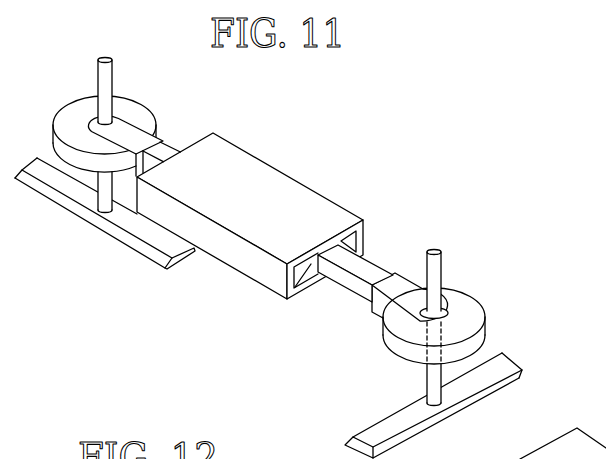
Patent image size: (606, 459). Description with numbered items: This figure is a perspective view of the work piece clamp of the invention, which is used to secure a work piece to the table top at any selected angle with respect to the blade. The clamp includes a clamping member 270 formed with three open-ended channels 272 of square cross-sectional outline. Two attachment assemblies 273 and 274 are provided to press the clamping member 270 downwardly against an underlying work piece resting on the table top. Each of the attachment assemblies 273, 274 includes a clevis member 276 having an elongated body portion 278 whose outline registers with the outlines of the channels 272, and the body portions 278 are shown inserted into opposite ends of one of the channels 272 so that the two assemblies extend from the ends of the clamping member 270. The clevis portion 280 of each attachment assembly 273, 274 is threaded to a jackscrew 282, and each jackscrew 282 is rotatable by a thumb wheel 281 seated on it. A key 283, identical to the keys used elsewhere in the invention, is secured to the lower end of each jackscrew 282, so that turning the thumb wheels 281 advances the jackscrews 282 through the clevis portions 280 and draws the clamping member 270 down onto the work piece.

The clamping member 270 is at (290, 182).
The open-ended channels 272 is at (355, 243).
The attachment assembly 273 is at (468, 285).
The attachment assembly 274 is at (150, 105).
The clevis member 276 is at (354, 233).
The elongated body portion 278 is at (160, 157).
The clevis portion 280 is at (128, 132).
The thumb wheel 281 is at (70, 110).
The jackscrew 282 is at (107, 57).
The key 283 is at (152, 253).